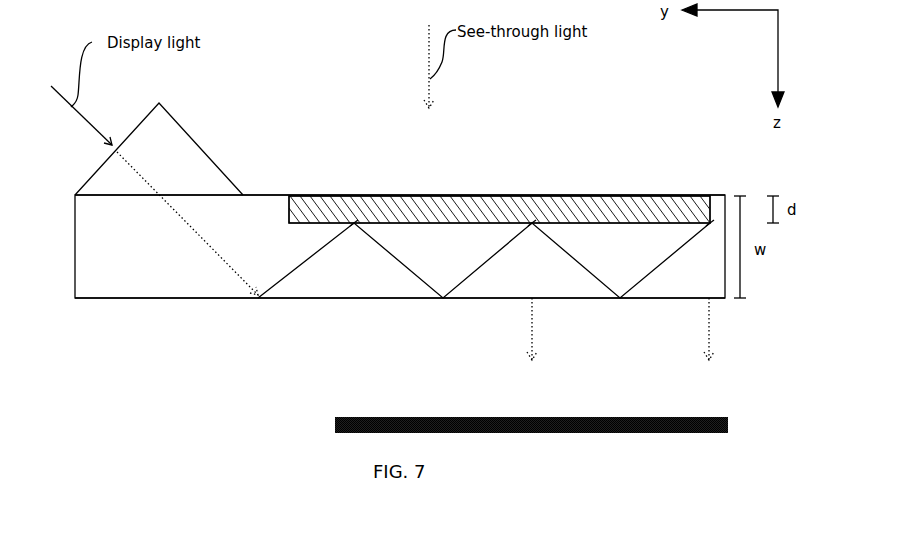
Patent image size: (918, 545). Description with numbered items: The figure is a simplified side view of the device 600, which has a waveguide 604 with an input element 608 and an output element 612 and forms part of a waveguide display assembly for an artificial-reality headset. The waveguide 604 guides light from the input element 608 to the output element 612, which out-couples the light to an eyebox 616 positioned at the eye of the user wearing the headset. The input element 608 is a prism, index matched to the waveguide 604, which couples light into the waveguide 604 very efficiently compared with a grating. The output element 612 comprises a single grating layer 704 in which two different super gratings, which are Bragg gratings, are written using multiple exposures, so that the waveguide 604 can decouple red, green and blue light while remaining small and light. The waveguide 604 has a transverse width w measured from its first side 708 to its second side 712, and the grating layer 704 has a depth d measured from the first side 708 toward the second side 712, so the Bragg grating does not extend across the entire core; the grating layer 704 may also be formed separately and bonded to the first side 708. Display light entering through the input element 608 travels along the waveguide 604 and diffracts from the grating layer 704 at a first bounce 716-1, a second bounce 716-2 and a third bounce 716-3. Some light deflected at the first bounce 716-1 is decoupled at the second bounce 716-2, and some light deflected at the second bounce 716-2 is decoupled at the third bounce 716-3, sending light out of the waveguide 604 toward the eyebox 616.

The device 600 is at (412, 187).
The waveguide 604 is at (188, 293).
The input element 608 is at (142, 137).
The output element 612 is at (562, 210).
The eyebox 616 is at (621, 417).
The grating layer 704 is at (541, 208).
The first side 708 is at (243, 194).
The second side 712 is at (345, 297).
The first bounce 716-1 is at (354, 217).
The second bounce 716-2 is at (532, 217).
The third bounce 716-3 is at (710, 217).